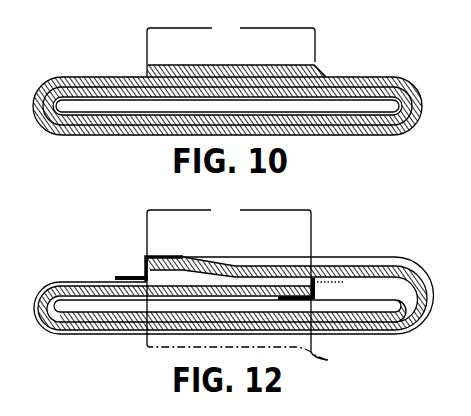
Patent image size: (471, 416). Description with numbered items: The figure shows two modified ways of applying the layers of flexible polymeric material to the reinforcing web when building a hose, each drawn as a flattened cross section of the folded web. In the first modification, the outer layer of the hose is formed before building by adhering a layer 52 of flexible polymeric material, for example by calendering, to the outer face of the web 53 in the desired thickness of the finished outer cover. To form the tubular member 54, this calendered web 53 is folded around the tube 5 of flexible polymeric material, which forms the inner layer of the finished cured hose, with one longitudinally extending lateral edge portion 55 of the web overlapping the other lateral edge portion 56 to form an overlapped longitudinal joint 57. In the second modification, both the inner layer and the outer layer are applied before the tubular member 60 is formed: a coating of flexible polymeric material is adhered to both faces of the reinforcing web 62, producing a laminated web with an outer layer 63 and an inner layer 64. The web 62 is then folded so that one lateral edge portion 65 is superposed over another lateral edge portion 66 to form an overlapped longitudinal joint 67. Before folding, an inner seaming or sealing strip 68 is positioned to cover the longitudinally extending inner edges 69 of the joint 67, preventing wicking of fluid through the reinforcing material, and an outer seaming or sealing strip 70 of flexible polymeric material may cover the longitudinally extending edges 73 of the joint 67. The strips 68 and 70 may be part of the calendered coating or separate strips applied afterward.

In FIG. 10, the tube 5 is at (88, 117).
In FIG. 10, the layer 52 is at (390, 77).
In FIG. 10, the web 53 is at (397, 123).
In FIG. 10, the tubular member 54 is at (97, 77).
In FIG. 10, the lateral edge portion 55 is at (231, 40).
In FIG. 10, the lateral edge portion 56 is at (303, 52).
In FIG. 10, the overlapped longitudinal joint 57 is at (285, 73).
In FIG. 12, the tubular member 60 is at (67, 281).
In FIG. 12, the reinforcing web 62 is at (412, 273).
In FIG. 12, the outer layer 63 is at (377, 258).
In FIG. 12, the inner layer 64 is at (412, 305).
In FIG. 12, the lateral edge portion 65 is at (237, 281).
In FIG. 12, the lateral edge portion 66 is at (250, 360).
In FIG. 12, the overlapped longitudinal joint 67 is at (247, 272).
In FIG. 12, the inner seaming strip 68 is at (318, 283).
In FIG. 12, the inner edges 69 is at (313, 280).
In FIG. 12, the outer seaming strip 70 is at (128, 275).
In FIG. 12, the edges 73 is at (186, 258).